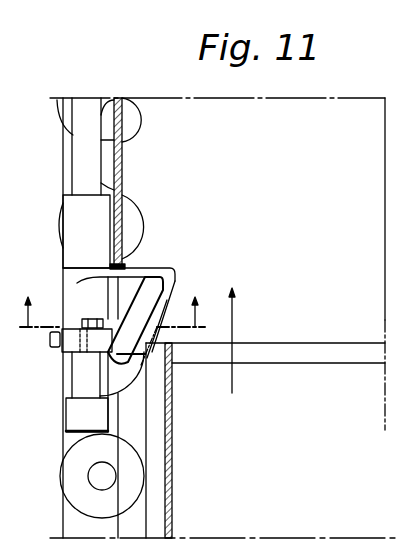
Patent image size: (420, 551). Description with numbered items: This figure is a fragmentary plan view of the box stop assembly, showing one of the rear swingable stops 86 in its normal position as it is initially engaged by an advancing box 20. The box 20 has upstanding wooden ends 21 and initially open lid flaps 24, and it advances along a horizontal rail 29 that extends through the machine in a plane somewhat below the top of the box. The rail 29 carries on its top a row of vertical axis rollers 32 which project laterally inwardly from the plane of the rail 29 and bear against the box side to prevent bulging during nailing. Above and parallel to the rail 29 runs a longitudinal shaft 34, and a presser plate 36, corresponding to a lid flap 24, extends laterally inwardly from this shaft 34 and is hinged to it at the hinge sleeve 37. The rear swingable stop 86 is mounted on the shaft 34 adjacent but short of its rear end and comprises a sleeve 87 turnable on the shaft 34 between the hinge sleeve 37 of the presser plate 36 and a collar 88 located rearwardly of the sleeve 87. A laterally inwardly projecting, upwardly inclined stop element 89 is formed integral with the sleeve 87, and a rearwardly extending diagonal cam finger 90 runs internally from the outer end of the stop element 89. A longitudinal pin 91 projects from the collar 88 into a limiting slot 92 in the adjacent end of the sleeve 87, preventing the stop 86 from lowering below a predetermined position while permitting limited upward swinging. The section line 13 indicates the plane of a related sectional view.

The section line 13- 13 is at (113, 303).
The produce packed box 20 is at (304, 334).
The upstanding wooden ends 21 is at (298, 355).
The lid flaps 24 is at (173, 462).
The horizontal rails 29 is at (75, 528).
The vertical axis rollers 32 is at (142, 222).
The longitudinal shaft 34 is at (83, 385).
The presser plate 36 is at (122, 167).
The hinge sleeve 37 is at (77, 219).
The rear swingable stop 86 is at (150, 322).
The sleeve 87 is at (123, 266).
The collar 88 is at (75, 348).
The stop element 89 is at (179, 266).
The diagonal cam finger 90 is at (160, 314).
The longitudinal pin 91 is at (50, 340).
The limiting slot 92 is at (108, 280).